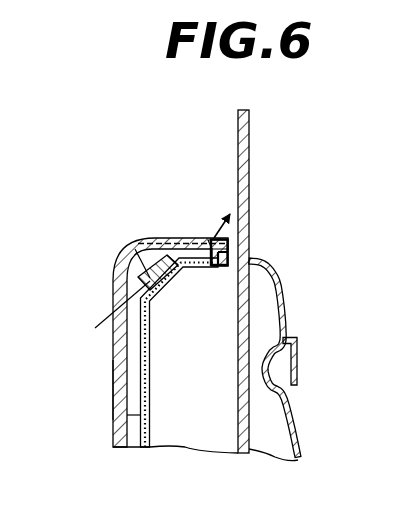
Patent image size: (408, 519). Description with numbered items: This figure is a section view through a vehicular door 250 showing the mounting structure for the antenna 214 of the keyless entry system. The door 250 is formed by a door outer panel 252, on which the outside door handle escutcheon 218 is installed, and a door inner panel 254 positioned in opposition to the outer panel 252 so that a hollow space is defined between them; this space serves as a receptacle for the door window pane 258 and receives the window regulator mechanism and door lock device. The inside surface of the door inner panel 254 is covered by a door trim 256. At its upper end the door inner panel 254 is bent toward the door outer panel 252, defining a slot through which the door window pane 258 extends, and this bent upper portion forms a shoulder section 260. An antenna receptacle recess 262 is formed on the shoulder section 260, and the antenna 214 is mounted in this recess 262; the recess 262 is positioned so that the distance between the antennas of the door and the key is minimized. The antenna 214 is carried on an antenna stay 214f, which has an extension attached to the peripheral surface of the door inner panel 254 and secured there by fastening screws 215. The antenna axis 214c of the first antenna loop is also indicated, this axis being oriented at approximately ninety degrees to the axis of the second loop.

The antenna 214 is at (141, 240).
The antenna axis 214c is at (250, 222).
The antenna stay 214f is at (172, 282).
The fastening screws 215 is at (150, 318).
The outside door handle escutcheon 218 is at (292, 393).
The vehicular door 250 is at (279, 262).
The door outer panel 252 is at (285, 305).
The door inner panel 254 is at (125, 428).
The door trim 256 is at (113, 391).
The door window pane 258 is at (250, 158).
The shoulder section 260 is at (220, 240).
The antenna receptacle recess 262 is at (190, 240).